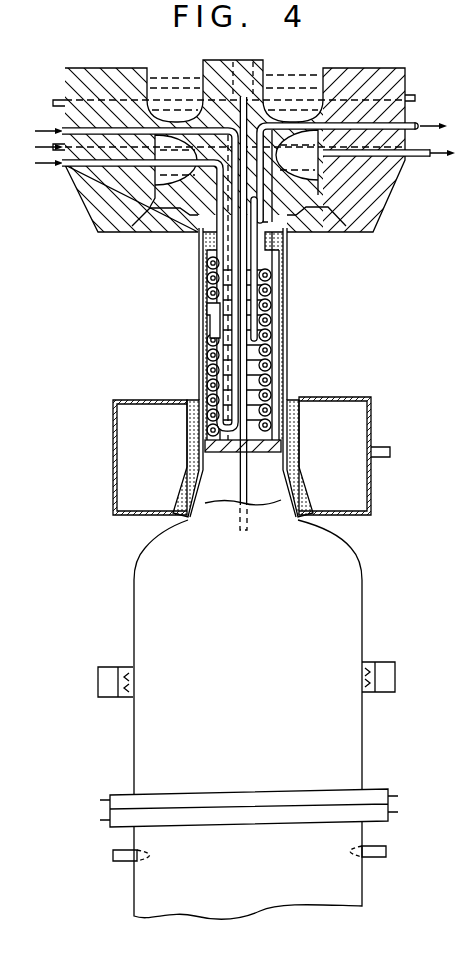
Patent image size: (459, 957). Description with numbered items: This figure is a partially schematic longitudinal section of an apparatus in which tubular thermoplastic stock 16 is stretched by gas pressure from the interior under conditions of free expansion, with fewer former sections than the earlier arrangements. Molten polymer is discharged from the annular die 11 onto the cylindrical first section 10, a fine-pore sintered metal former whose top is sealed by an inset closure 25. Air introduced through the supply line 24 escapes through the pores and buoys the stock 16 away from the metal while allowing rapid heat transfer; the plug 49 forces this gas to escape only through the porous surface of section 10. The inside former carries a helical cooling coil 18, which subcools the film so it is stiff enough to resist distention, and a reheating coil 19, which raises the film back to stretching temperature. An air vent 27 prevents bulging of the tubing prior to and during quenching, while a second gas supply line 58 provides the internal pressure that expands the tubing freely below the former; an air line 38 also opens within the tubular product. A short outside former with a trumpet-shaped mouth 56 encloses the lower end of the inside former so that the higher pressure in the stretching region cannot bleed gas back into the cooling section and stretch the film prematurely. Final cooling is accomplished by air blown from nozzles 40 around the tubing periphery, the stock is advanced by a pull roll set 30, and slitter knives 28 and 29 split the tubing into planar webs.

The first section 10 is at (200, 250).
The annular die 11 is at (267, 215).
The tubular thermoplastic stock 16 is at (287, 503).
The helical cooling coil 18 is at (208, 261).
The helical heating coil 19 is at (209, 341).
The supply line 24 is at (60, 167).
The inset closure 25 is at (263, 239).
The air vent 27 is at (412, 124).
The slitter knife 28 is at (113, 856).
The slitter knife 29 is at (386, 852).
The pull roll set 30 is at (392, 792).
The air supply line 38 is at (385, 144).
The nozzle 40 is at (386, 664).
The plug 49 is at (257, 453).
The outside former with trumpet-shaped mouth 56 is at (357, 433).
The second gas supply line 58 is at (62, 129).